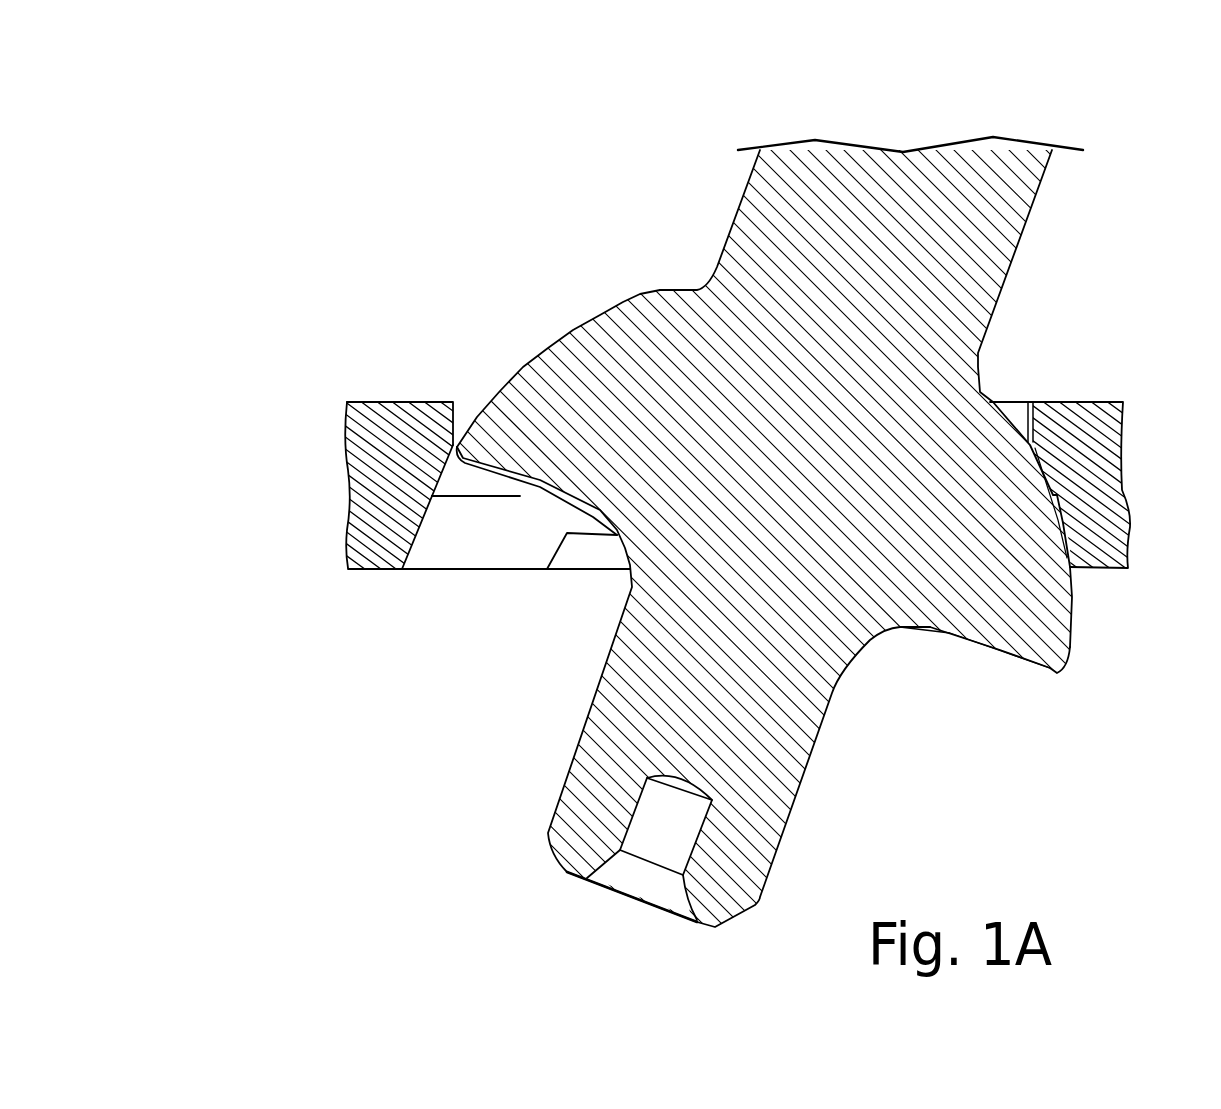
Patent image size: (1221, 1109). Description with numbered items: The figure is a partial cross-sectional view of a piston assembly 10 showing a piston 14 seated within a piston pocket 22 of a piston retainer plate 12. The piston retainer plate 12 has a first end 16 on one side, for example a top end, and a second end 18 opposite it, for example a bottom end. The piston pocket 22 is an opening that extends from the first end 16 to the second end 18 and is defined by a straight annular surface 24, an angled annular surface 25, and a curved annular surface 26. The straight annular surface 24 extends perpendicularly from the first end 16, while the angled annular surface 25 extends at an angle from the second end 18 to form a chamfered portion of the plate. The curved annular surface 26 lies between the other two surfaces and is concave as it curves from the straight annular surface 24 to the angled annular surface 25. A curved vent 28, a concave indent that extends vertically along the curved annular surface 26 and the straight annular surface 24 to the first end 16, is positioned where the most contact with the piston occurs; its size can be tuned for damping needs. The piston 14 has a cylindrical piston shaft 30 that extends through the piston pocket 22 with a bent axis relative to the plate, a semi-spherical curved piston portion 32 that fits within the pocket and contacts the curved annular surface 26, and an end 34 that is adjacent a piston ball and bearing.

The piston assembly 10 is at (558, 163).
The piston retainer plate 12 is at (327, 452).
The piston 14 is at (727, 237).
The first end 16 is at (408, 402).
The second end 18 is at (375, 570).
The piston pocket 22 is at (503, 550).
The straight annular surface 24 is at (463, 402).
The angled annular surface 25 is at (402, 538).
The curved annular surface 26 is at (437, 483).
The curved vent 28 is at (1036, 413).
The piston shaft 30 is at (980, 207).
The curved piston portion 32 is at (1048, 638).
The end 34 is at (702, 925).